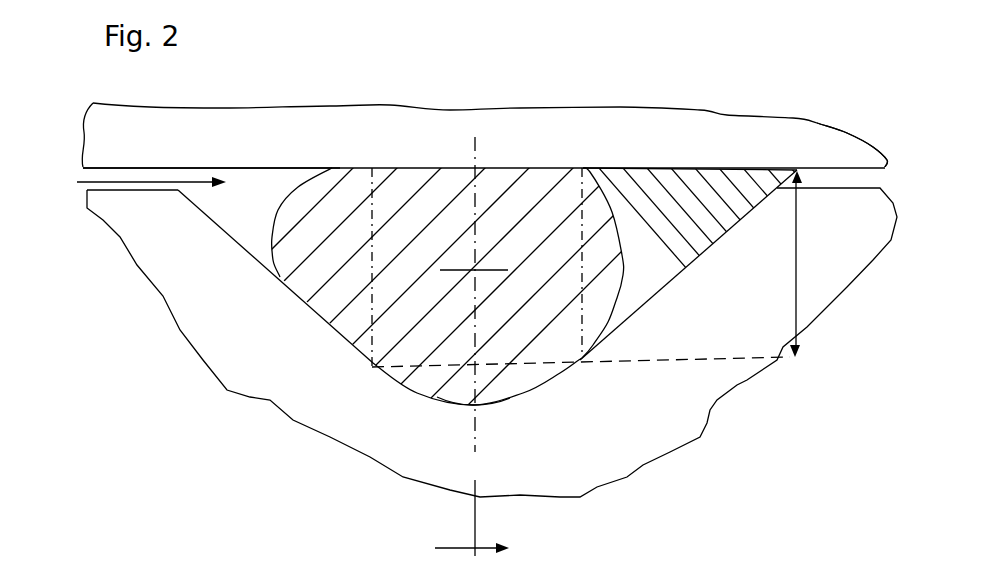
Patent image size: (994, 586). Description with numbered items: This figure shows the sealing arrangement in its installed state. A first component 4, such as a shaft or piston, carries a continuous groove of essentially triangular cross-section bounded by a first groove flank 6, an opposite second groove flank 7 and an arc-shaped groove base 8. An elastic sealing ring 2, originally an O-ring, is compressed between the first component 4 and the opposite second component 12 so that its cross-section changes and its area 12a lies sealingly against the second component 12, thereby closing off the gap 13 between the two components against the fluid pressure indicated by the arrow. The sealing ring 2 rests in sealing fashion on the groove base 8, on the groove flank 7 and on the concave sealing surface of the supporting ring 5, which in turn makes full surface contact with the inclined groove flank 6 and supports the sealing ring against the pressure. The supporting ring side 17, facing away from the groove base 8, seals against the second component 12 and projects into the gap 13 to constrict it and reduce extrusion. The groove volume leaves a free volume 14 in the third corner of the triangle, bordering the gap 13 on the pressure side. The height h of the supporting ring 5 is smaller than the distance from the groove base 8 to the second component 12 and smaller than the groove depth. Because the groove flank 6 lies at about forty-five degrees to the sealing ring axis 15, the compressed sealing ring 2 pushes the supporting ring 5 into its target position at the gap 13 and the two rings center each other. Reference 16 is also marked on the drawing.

The sealing ring 2 is at (560, 340).
The first component 4 is at (492, 342).
The supporting ring 5 is at (668, 272).
The first groove flank 6 is at (654, 325).
The second groove flank 7 is at (308, 334).
The groove base 8 is at (462, 407).
The second component 12 is at (710, 133).
The area of the sealing ring 12a is at (512, 163).
The gap 13 is at (833, 180).
The free volume 14 is at (267, 195).
The sealing ring axis 15 is at (472, 538).
The beam axis 16 is at (478, 510).
The supporting ring side 17 is at (690, 116).
The height of supporting ring h is at (803, 264).